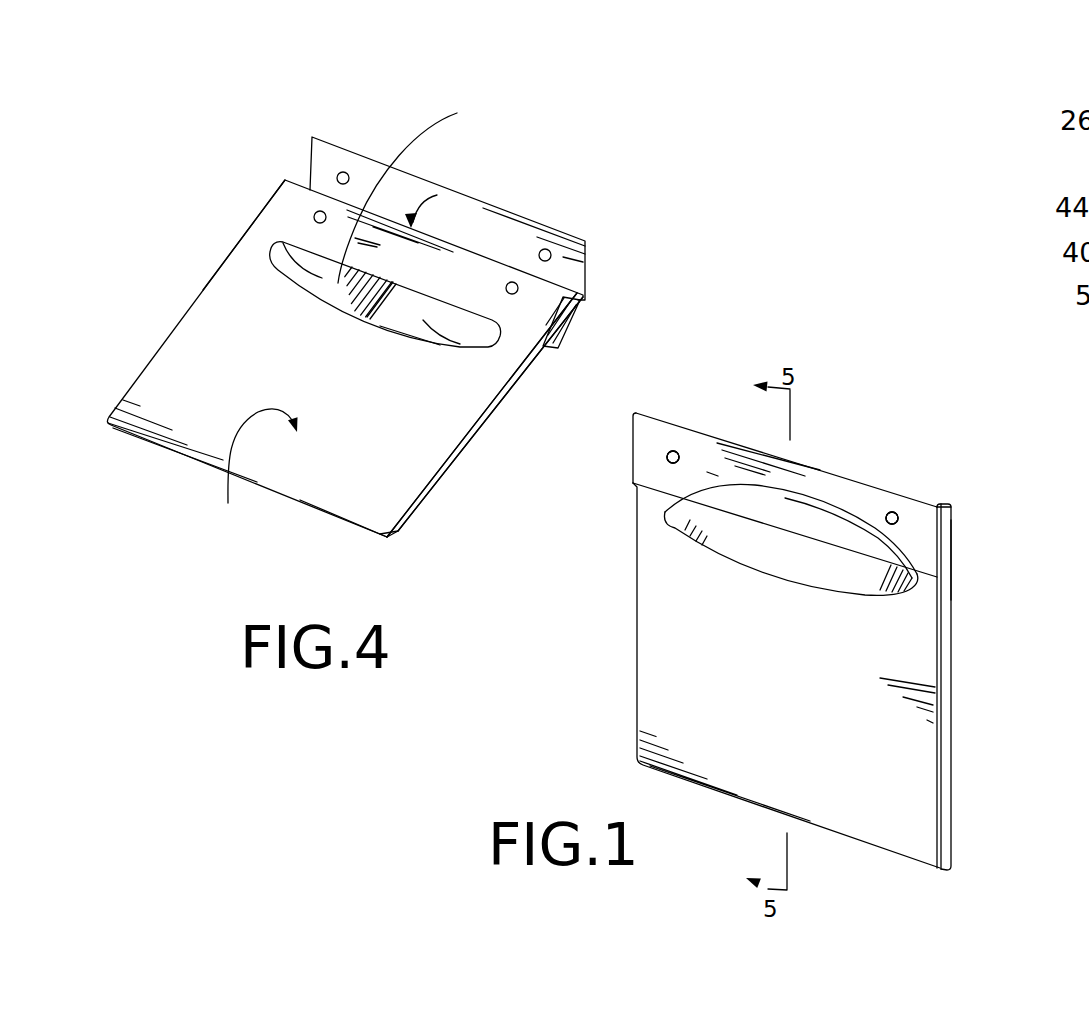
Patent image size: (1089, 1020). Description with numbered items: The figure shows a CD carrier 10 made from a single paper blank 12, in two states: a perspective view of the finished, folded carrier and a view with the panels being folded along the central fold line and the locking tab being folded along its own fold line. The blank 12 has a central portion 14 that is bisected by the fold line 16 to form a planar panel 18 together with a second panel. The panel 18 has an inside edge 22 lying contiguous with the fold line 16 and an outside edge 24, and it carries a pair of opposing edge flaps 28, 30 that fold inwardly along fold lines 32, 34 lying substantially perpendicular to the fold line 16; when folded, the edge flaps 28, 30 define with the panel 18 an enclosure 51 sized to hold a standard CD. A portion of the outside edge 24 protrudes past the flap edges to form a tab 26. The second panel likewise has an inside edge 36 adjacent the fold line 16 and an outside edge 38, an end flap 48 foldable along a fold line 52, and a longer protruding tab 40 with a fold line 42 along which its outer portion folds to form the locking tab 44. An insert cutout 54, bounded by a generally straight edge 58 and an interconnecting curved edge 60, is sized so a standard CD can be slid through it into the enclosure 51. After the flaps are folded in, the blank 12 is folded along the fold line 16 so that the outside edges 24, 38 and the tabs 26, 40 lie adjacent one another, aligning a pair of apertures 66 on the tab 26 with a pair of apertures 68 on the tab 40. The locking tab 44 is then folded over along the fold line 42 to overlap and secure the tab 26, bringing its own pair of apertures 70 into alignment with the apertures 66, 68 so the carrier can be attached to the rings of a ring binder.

In FIG. 4, the CD carrier 10 is at (150, 465).
In FIG. 1, the CD carrier 10 is at (592, 673).
In FIG. 4, the paper blank 12 is at (146, 340).
In FIG. 1, the paper blank 12 is at (635, 597).
In FIG. 4, the central portion 14 is at (303, 487).
In FIG. 4, the fold line 16 is at (200, 463).
In FIG. 1, the fold line 16 is at (737, 800).
In FIG. 4, the planar panel 18 is at (273, 344).
In FIG. 1, the planar panel 18 is at (804, 708).
In FIG. 4, the inside edge 22 is at (347, 503).
In FIG. 1, the outside edge 24 is at (947, 504).
In FIG. 1, the tab 26 is at (945, 532).
In FIG. 4, the edge flap 28 is at (276, 240).
In FIG. 4, the edge flap 30 is at (424, 322).
In FIG. 4, the fold line 32 is at (203, 284).
In FIG. 4, the fold line 34 is at (467, 427).
In FIG. 4, the inside edge 36 is at (398, 534).
In FIG. 1, the outside edge 38 is at (633, 413).
In FIG. 1, the tab 40 is at (950, 548).
In FIG. 4, the fold line 42 is at (578, 298).
In FIG. 1, the fold line 42 is at (870, 477).
In FIG. 4, the locking tab 44 is at (483, 201).
In FIG. 1, the locking tab 44 is at (915, 531).
In FIG. 4, the end flap 48 is at (557, 333).
In FIG. 4, the enclosure 51 is at (413, 191).
In FIG. 4, the fold line 52 is at (527, 377).
In FIG. 4, the insert cutout 54 is at (406, 352).
In FIG. 1, the insert cutout 54 is at (873, 605).
In FIG. 4, the straight edge 58 is at (410, 288).
In FIG. 1, the straight edge 58 is at (681, 507).
In FIG. 4, the curved edge 60 is at (368, 337).
In FIG. 1, the curved edge 60 is at (765, 577).
In FIG. 4, the apertures 66 is at (317, 212).
In FIG. 1, the apertures 66 is at (671, 451).
In FIG. 1, the apertures 68 is at (675, 452).
In FIG. 4, the apertures 70 is at (345, 172).
In FIG. 1, the apertures 70 is at (670, 452).